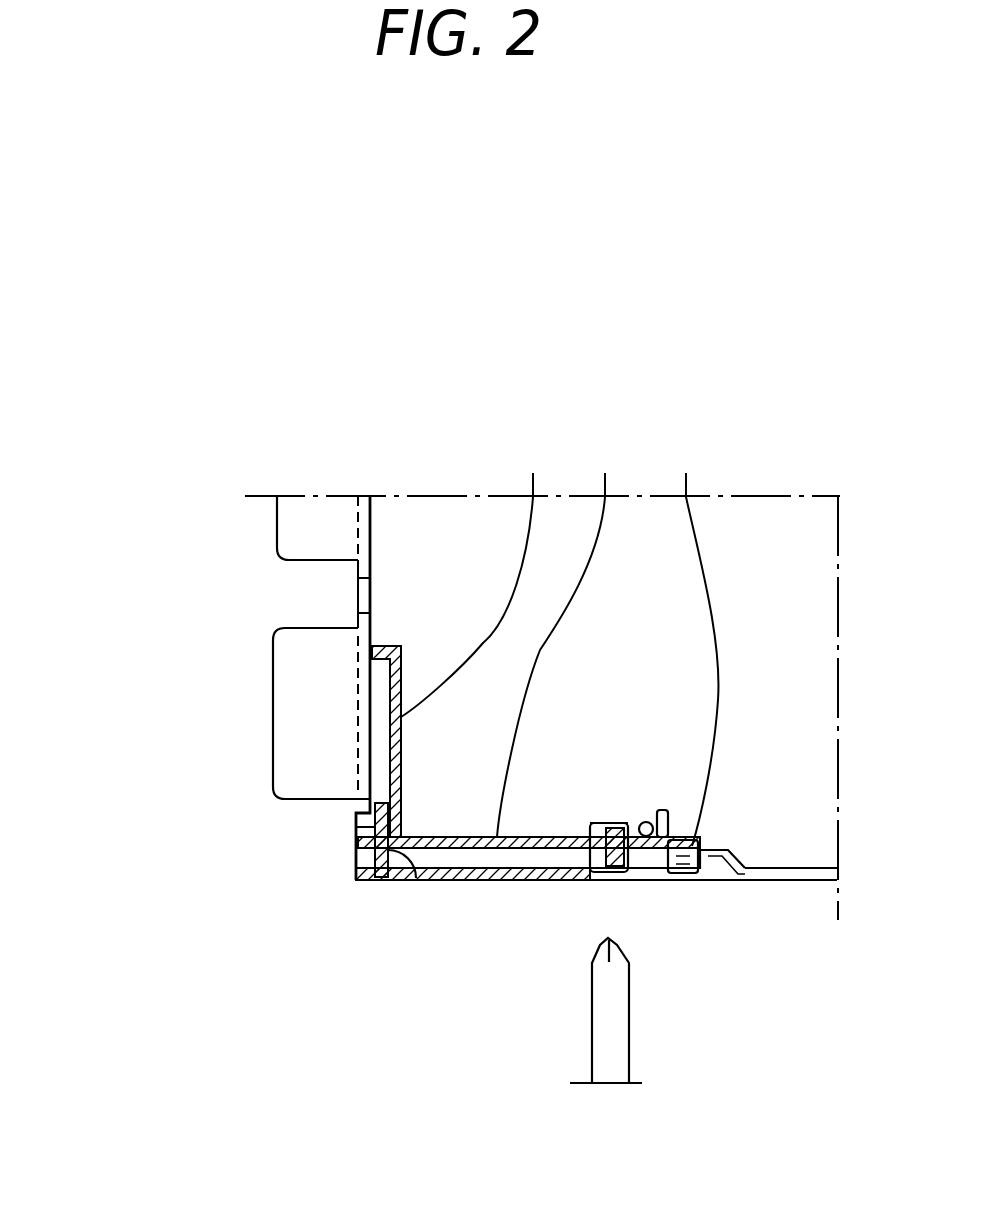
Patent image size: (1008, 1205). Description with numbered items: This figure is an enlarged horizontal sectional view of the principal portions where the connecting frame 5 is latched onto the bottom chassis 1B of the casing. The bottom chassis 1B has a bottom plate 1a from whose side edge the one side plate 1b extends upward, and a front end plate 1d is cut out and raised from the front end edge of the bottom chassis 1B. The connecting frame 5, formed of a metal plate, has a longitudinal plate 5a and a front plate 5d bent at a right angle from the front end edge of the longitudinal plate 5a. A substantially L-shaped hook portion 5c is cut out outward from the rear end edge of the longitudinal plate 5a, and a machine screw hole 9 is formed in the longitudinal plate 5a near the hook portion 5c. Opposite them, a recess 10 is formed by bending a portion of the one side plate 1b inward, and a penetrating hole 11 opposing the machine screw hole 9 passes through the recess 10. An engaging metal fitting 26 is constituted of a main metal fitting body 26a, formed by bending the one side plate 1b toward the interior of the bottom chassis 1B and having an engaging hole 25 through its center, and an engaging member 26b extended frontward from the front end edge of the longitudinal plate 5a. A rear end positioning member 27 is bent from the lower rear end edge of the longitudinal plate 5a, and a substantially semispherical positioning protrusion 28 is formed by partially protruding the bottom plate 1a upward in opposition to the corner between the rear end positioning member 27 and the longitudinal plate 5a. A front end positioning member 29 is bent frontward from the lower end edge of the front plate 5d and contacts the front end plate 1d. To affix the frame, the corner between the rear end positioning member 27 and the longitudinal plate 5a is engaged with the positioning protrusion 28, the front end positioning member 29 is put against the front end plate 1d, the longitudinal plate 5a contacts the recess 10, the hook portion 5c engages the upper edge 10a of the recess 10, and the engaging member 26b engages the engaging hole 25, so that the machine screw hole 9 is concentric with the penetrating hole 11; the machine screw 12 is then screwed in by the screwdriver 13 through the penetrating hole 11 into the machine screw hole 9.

The bottom plate 1a is at (410, 507).
The one side plate 1b is at (782, 872).
The front end plate 1d is at (368, 687).
The bottom chassis 1B is at (461, 494).
The connecting frame 5 is at (560, 608).
The longitudinal plate 5a is at (561, 636).
The hook portion 5c is at (691, 641).
The front plate 5d is at (477, 576).
The machine screw hole 9 is at (607, 823).
The recess 10 is at (723, 873).
The upper edge 10a is at (712, 872).
The penetrating hole 11 is at (598, 880).
The machine screw 12 is at (618, 880).
The screwdriver 13 is at (600, 984).
The engaging hole 25 is at (412, 880).
The engaging metal fitting 26 is at (239, 912).
The main metal fitting body 26a is at (357, 818).
The engaging member 26b is at (375, 846).
The rear end positioning member 27 is at (663, 810).
The positioning protrusion 28 is at (645, 820).
The front end positioning member 29 is at (377, 645).